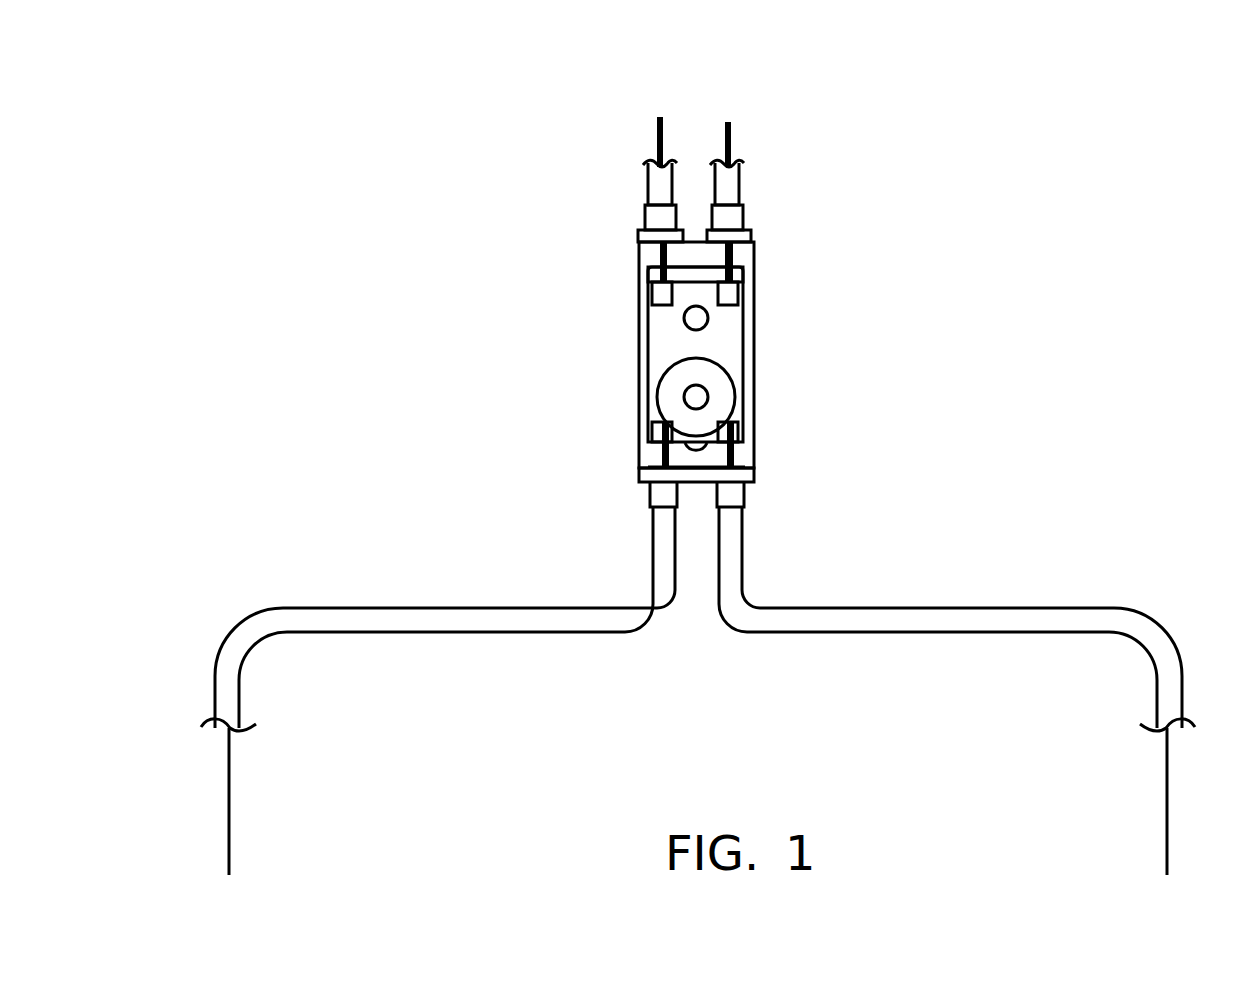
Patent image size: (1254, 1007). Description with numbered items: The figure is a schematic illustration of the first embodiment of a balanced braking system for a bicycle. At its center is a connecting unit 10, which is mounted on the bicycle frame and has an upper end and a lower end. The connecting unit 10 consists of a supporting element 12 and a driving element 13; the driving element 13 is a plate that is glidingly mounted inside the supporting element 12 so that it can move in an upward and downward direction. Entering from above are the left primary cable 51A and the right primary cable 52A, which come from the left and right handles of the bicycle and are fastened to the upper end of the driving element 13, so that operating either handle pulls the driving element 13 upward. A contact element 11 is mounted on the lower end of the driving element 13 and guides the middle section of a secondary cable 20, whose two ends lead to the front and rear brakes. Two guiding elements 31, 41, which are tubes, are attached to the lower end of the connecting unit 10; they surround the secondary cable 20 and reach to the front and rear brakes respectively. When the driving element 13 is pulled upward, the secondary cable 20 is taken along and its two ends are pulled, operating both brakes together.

The connecting unit 10 is at (782, 340).
The contact element 11 is at (670, 407).
The supporting element 12 is at (745, 255).
The driving element 13 is at (660, 338).
The secondary cable 20 is at (660, 463).
The guiding element 31 is at (252, 625).
The guiding element 41 is at (1123, 622).
The left primary cable 51A is at (657, 137).
The right primary cable 52A is at (730, 133).